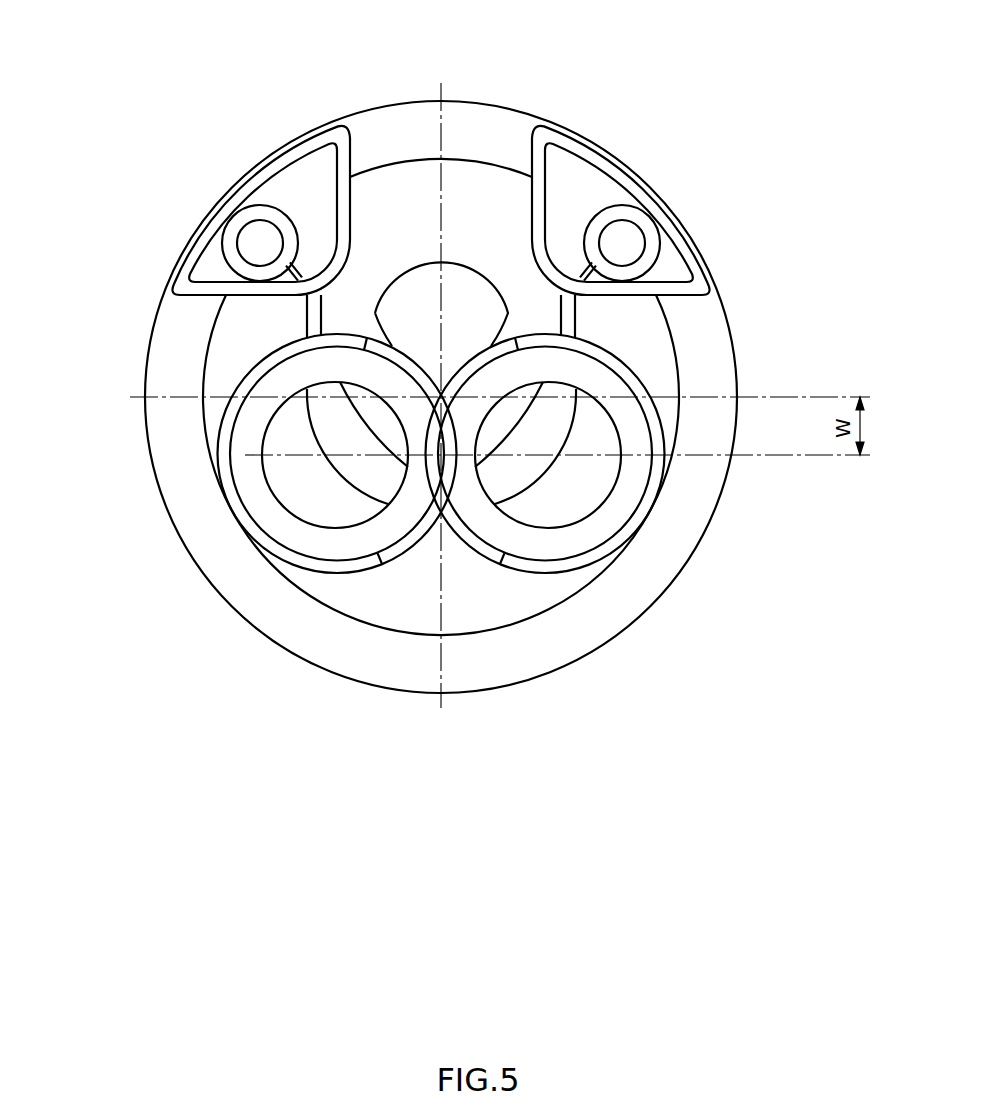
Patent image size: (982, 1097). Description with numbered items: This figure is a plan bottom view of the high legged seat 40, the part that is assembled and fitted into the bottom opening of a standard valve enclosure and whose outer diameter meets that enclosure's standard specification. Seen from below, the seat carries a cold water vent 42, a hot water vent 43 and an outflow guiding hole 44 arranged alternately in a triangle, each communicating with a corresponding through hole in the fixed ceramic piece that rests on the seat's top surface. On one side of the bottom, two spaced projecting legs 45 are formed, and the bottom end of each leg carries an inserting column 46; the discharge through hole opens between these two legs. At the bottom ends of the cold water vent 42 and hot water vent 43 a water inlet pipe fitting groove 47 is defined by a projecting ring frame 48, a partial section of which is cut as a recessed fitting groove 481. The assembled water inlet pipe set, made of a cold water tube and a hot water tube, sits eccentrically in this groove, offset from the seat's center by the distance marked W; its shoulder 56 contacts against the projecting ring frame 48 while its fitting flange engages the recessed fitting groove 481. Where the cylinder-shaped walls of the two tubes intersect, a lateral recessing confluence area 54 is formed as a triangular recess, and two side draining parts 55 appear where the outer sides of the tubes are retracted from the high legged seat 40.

The high legged seat 40 is at (736, 522).
The cold water vent 42 is at (283, 503).
The hot water vent 43 is at (600, 497).
The outflow guiding hole 44 is at (415, 283).
The projecting legs 45 is at (352, 160).
The inserting columns 46 is at (270, 207).
The water inlet pipe fitting groove 47 is at (586, 383).
The projecting ring frame 48 is at (248, 363).
The recessed fitting groove 481 is at (475, 541).
The lateral recessing confluence area 54 is at (455, 347).
The side draining parts 55 is at (208, 502).
The shoulder 56 is at (380, 580).